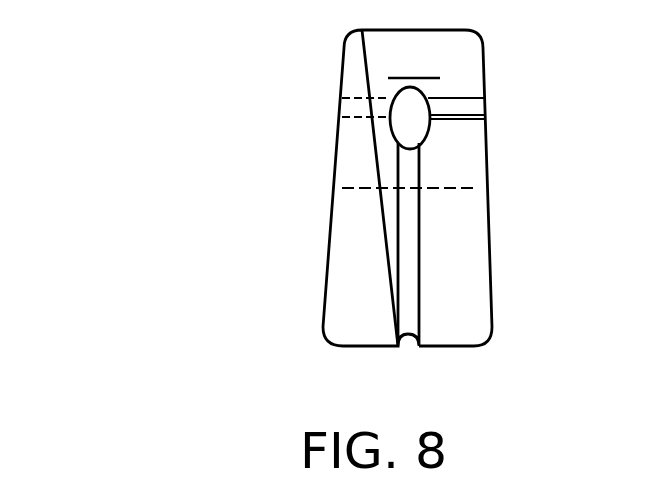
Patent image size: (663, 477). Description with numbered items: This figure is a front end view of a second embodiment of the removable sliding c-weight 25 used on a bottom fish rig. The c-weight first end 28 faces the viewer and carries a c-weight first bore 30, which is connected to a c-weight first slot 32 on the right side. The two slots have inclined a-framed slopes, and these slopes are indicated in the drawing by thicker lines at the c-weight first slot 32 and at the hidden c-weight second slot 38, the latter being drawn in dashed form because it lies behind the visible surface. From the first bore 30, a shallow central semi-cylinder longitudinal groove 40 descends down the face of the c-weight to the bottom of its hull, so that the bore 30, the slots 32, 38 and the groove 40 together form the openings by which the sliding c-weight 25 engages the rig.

The removable sliding c-weight 25 is at (205, 258).
The c-weight first end 28 is at (414, 56).
The c-weight first bore 30 is at (430, 132).
The c-weight first slot 32 is at (470, 109).
The c-weight second slot 38 is at (340, 105).
The longitudinal groove 40 is at (408, 336).